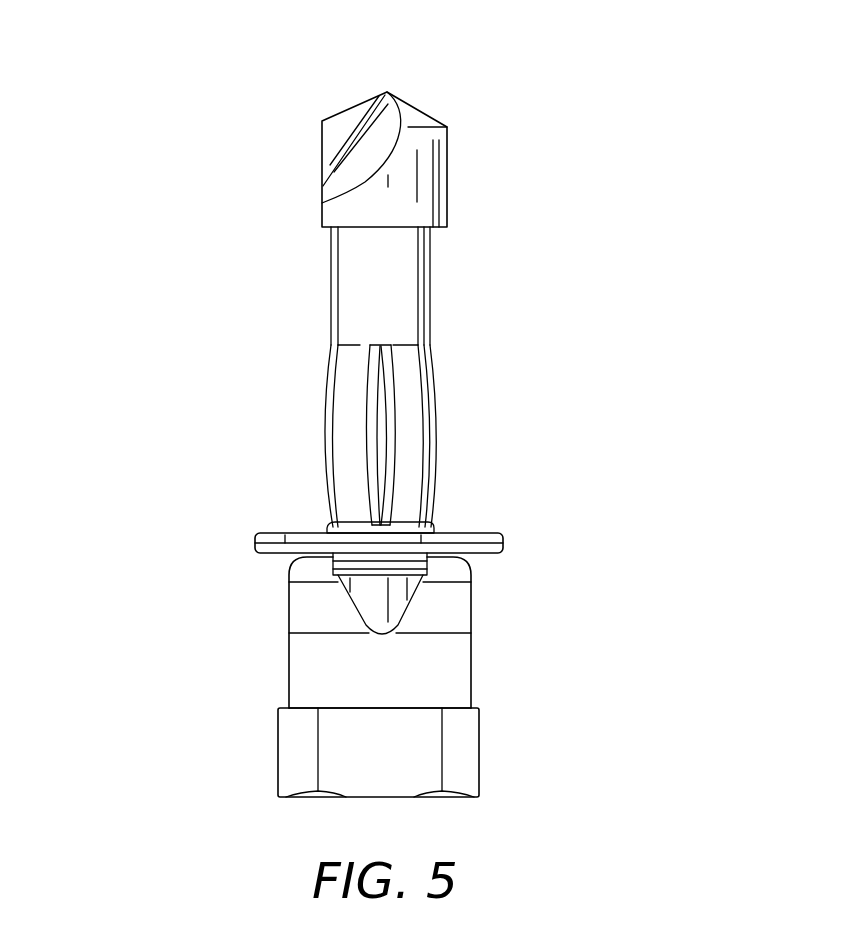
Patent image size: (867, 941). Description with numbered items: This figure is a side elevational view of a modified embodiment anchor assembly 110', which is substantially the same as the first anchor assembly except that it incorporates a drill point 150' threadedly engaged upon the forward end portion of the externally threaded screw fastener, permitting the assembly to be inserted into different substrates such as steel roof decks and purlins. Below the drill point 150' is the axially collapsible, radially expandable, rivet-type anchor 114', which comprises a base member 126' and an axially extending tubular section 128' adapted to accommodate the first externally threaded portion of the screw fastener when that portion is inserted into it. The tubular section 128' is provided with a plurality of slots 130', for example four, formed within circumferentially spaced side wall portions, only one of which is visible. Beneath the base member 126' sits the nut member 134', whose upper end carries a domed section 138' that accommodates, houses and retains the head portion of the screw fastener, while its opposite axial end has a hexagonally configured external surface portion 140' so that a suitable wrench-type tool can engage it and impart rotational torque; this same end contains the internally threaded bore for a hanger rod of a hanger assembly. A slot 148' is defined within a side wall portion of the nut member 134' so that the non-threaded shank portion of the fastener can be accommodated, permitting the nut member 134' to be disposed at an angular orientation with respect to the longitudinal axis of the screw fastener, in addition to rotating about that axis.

The modified embodiment anchor assembly 110' is at (386, 405).
The drill point 150' is at (334, 150).
The rivet-type anchor 114' is at (453, 286).
The axially extending tubular section 128' is at (304, 439).
The slots 130' is at (478, 435).
The base member 126' is at (447, 504).
The domed section 138' is at (292, 632).
The slot 148' is at (477, 593).
The nut member 134' is at (308, 752).
The hexagonally configured external surface portion 140' is at (469, 752).